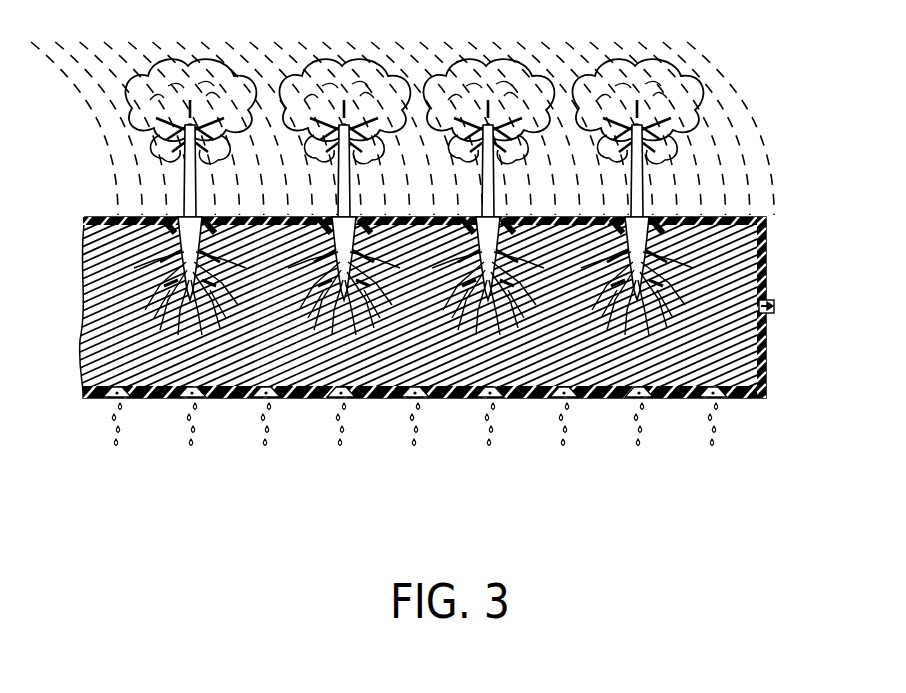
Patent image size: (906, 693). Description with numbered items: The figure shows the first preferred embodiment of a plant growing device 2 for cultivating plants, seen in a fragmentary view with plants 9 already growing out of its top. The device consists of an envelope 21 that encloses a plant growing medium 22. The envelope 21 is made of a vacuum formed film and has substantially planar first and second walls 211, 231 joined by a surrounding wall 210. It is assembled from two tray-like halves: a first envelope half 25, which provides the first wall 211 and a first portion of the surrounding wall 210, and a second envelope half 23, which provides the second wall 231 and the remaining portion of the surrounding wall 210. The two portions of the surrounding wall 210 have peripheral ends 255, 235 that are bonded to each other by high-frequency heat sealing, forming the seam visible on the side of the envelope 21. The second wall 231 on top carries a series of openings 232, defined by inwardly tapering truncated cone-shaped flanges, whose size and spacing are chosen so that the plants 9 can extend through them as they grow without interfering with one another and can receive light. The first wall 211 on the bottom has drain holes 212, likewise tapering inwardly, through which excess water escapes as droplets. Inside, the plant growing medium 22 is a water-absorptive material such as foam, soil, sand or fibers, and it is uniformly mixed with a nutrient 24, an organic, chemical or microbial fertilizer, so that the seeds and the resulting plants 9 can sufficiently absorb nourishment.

The plant growing device 2 is at (718, 196).
The plants 9 is at (658, 90).
The envelope 21 is at (461, 427).
The plant growing medium 22 is at (747, 354).
The second envelope half 23 is at (461, 128).
The nutrient 24 is at (767, 273).
The first envelope half 25 is at (767, 383).
The surrounding wall 210 is at (737, 277).
The first wall 211 is at (297, 400).
The drain holes 212 is at (497, 400).
The second wall 231 is at (412, 215).
The openings 232 is at (620, 220).
The peripheral end of the second portion of the surrounding wall 235 is at (775, 303).
The peripheral end of the first portion of the surrounding wall 255 is at (775, 312).